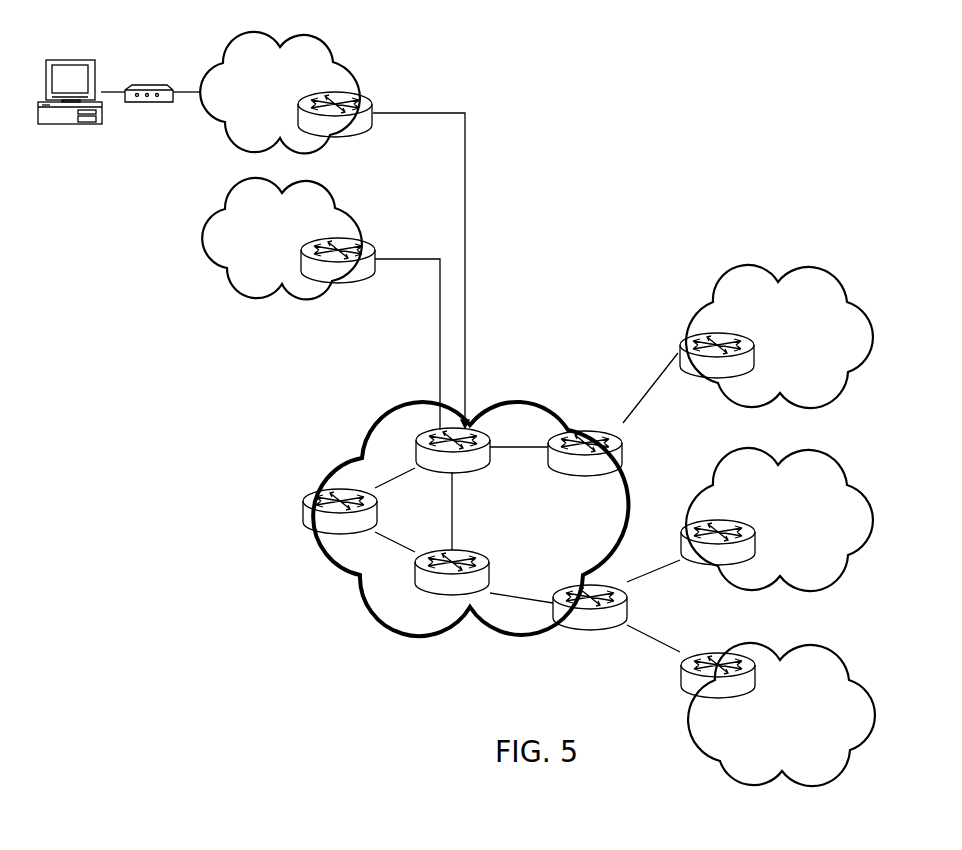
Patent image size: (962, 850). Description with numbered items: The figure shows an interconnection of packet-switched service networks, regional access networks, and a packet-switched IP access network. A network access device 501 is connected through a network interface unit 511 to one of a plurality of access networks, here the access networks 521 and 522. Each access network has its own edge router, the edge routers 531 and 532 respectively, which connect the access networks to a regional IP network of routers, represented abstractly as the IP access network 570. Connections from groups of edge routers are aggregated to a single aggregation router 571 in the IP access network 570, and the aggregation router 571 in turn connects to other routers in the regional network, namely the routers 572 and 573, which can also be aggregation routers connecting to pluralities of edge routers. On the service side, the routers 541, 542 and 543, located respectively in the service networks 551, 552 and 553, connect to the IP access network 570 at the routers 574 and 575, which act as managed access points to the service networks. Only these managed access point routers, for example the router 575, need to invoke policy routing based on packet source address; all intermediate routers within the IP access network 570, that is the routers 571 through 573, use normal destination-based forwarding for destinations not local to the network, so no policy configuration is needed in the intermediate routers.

The network access device 501 is at (70, 105).
The network interface unit 511 is at (149, 105).
The access network 521 is at (280, 93).
The access network 522 is at (282, 239).
The edge router 531 is at (335, 133).
The edge router 532 is at (338, 278).
The IP access network 570 is at (470, 519).
The aggregation router 571 is at (453, 467).
The router 572 is at (340, 528).
The router 573 is at (452, 591).
The router 574 is at (585, 469).
The router 575 is at (590, 623).
The router 541 is at (718, 560).
The router 542 is at (718, 693).
The router 543 is at (717, 373).
The service network 551 is at (779, 519).
The service network 552 is at (781, 714).
The service network 553 is at (779, 336).